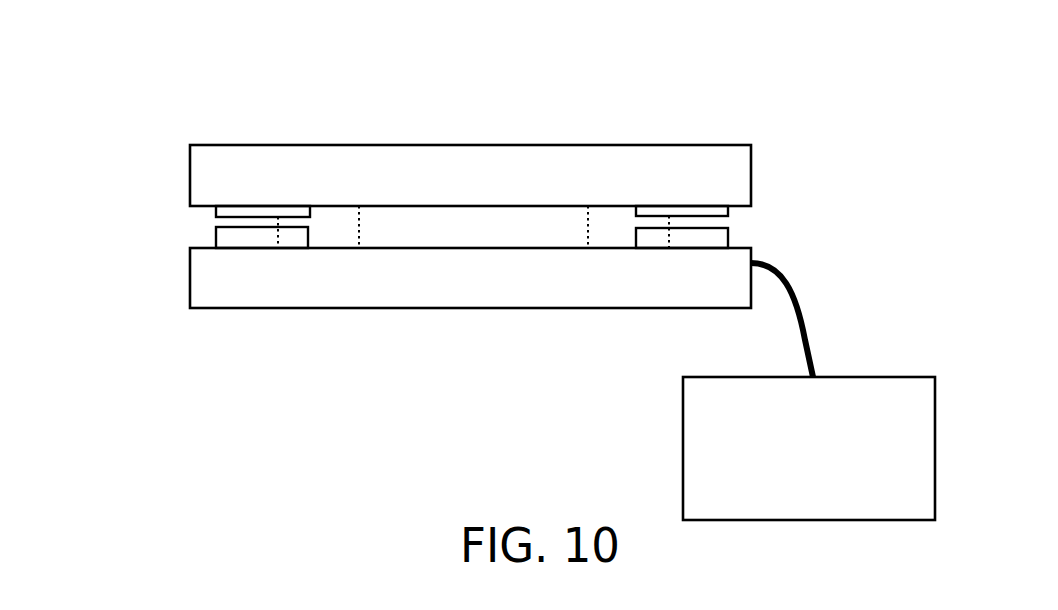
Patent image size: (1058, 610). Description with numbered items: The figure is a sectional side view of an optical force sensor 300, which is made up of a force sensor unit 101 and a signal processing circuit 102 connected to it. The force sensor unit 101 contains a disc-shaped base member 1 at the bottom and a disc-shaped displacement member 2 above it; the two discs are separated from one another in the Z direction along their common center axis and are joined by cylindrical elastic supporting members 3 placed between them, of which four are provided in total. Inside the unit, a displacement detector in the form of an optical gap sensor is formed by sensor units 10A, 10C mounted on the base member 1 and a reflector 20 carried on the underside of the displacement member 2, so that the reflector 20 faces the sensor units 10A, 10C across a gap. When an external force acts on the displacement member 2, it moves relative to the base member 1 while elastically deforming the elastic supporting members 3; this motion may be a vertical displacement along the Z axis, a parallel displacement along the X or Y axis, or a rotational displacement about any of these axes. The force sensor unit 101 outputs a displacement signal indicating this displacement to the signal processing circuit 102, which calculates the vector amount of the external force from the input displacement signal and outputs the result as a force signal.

The optical force sensor 300 is at (848, 54).
The force sensor unit 101 is at (222, 86).
The displacement member 2 is at (190, 172).
The base member 1 is at (190, 285).
The reflector 20 is at (216, 212).
The sensor unit 10A is at (216, 236).
The sensor unit 10C is at (728, 240).
The elastic supporting member 3 is at (588, 230).
The signal processing circuit 102 is at (870, 377).